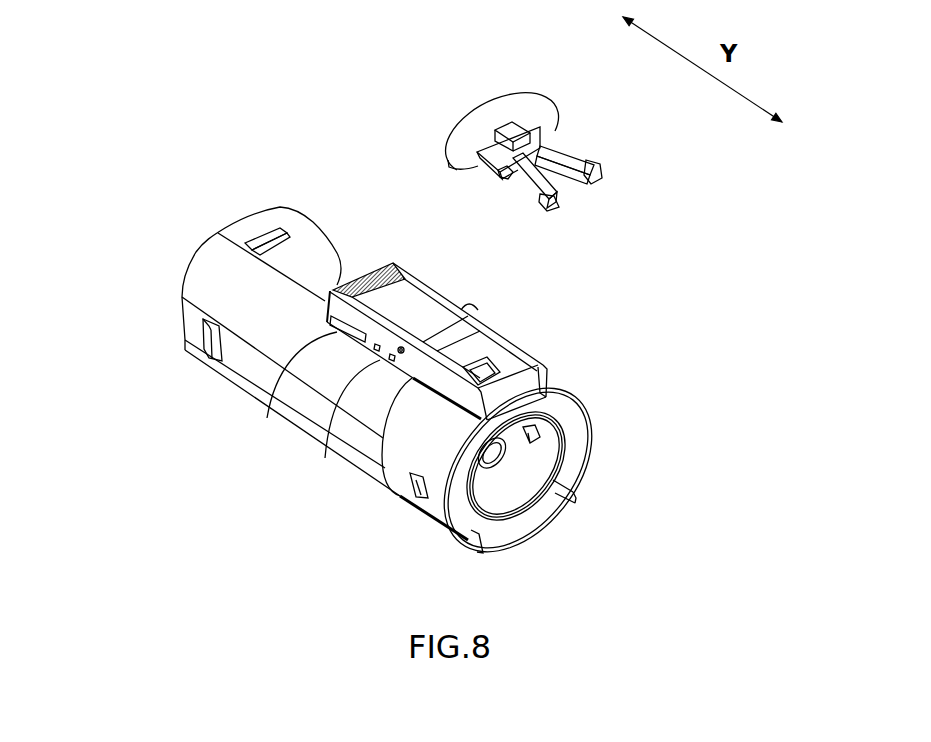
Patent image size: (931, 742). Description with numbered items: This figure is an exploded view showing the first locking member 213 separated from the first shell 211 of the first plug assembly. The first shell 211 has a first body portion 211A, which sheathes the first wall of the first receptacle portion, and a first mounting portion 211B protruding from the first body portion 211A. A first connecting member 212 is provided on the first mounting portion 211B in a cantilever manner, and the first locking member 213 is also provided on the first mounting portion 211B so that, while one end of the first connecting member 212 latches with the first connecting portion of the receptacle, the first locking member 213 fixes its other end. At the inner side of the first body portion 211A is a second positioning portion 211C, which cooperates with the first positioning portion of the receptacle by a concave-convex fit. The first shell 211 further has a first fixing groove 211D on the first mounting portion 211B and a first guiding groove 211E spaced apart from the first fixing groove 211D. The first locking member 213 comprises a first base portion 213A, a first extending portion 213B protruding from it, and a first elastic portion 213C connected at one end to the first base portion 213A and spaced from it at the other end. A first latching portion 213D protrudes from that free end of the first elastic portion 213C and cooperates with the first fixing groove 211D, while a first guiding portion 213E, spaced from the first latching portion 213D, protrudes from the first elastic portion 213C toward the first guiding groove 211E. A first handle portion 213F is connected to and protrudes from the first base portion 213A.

The first shell 211 is at (158, 289).
The first body portion 211A is at (418, 458).
The first mounting portion 211B is at (337, 275).
The second positioning portion 211C is at (562, 512).
The first fixing groove 211D is at (336, 424).
The first guiding groove 211E is at (282, 388).
The first connecting member 212 is at (432, 304).
The first locking member 213 is at (603, 209).
The first base portion 213A is at (557, 148).
The first extending portion 213B is at (520, 125).
The first elastic portion 213C is at (588, 152).
The first latching portion 213D is at (600, 170).
The first guiding portion 213E is at (499, 180).
The first handle portion 213F is at (492, 98).